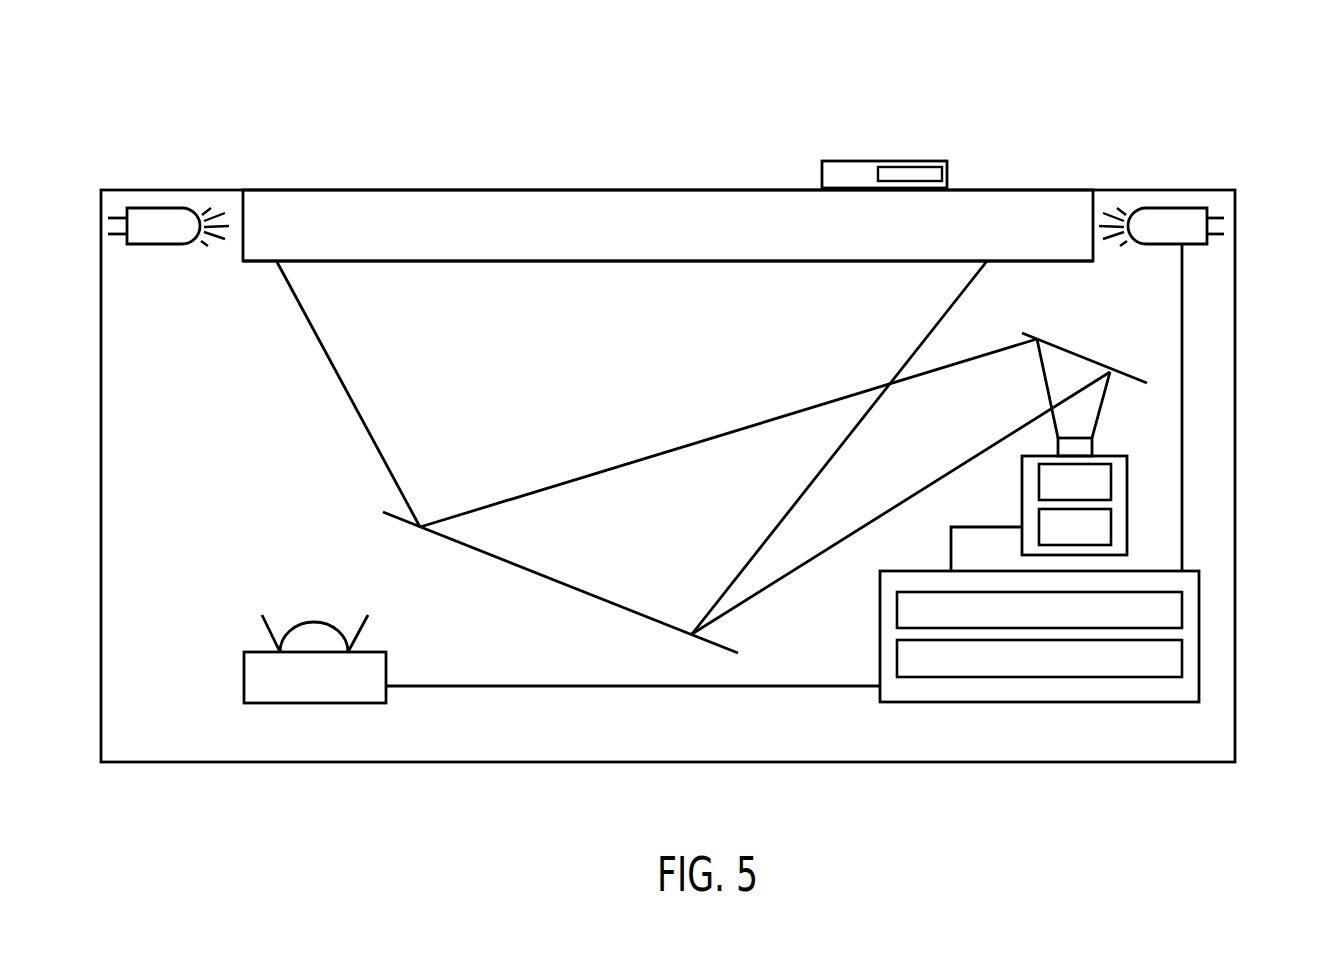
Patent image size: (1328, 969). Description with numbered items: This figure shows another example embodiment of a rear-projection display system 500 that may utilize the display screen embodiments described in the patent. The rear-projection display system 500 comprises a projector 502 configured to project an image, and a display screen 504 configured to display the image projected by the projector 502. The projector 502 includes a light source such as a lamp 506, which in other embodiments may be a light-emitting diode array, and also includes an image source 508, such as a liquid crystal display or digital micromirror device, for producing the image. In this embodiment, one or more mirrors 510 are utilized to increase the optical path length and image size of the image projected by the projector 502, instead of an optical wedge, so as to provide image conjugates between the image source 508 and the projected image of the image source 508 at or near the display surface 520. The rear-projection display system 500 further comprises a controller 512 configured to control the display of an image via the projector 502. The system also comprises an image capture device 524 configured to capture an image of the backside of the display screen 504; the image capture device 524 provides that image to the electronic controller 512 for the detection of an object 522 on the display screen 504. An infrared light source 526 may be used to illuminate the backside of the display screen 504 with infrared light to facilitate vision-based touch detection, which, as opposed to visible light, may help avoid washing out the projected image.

The rear-projection display system 500 is at (200, 103).
The projector 502 is at (1171, 512).
The display screen 504 is at (773, 243).
The lamp 506 is at (1111, 527).
The image source 508 is at (1111, 482).
The mirrors 510 is at (1088, 352).
The controller 512 is at (973, 702).
The display surface 520 is at (420, 170).
The object 522 is at (947, 161).
The image capture device 524 is at (308, 686).
The infrared light source 526 is at (160, 207).